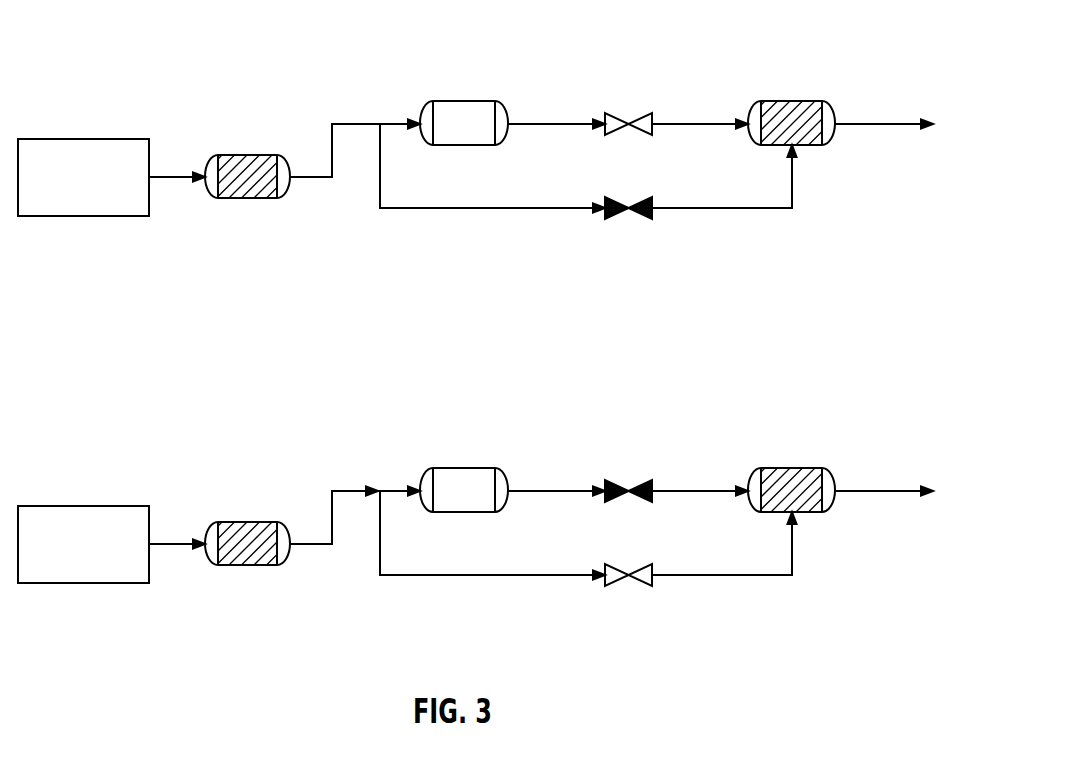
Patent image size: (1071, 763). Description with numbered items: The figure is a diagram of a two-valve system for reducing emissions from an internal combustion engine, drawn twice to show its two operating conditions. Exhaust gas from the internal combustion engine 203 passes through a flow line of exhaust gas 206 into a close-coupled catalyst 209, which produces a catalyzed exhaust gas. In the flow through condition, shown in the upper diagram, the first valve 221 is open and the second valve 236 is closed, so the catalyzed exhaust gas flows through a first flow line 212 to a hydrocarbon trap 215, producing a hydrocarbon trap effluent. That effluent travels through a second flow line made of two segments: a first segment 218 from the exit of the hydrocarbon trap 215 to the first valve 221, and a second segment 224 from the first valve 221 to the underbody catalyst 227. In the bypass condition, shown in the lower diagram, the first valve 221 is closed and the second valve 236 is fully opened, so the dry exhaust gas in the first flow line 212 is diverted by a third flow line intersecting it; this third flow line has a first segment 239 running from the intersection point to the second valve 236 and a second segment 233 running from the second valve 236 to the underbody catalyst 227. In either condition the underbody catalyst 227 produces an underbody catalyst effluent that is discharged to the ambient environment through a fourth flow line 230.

The internal combustion engine 203 is at (88, 139).
The flow line of exhaust gas 206 is at (187, 180).
The close-coupled catalyst 209 is at (247, 155).
The first flow line 212 is at (357, 122).
The hydrocarbon trap 215 is at (453, 100).
The first segment of the second flow line 218 is at (567, 122).
The first valve 221 is at (610, 112).
The second segment of the second flow line 224 is at (707, 122).
The underbody catalyst 227 is at (792, 100).
The fourth flow line 230 is at (882, 126).
The second segment of the third flow line 233 is at (720, 209).
The second valve 236 is at (635, 218).
The first segment of the third flow line 239 is at (493, 209).